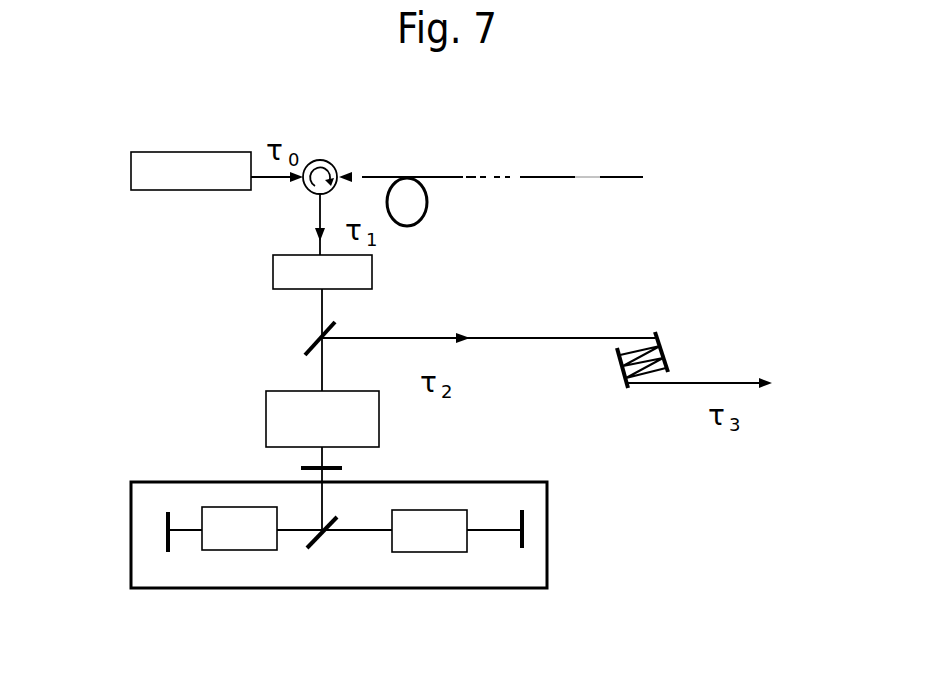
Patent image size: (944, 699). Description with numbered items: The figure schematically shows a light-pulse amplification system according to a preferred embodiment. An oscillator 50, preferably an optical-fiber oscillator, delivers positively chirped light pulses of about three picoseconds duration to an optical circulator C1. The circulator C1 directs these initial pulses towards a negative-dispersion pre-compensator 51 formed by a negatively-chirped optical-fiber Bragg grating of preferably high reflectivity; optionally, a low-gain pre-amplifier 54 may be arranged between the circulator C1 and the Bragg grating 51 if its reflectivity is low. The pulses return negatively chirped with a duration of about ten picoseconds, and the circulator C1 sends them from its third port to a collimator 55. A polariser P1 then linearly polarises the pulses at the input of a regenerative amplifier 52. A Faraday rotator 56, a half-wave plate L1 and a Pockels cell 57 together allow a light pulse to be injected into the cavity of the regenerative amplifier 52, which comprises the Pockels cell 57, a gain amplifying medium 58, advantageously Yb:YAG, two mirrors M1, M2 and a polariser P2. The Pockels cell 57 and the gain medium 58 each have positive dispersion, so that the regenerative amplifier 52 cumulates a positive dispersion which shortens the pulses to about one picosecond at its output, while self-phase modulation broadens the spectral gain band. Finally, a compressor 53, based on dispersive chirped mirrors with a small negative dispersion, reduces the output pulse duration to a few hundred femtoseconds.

The oscillator 50 is at (230, 190).
The negative-dispersion pre-compensator 51 is at (572, 177).
The regenerative amplifier 52 is at (550, 510).
The compressor 53 is at (658, 332).
The pre-amplifier 54 is at (428, 212).
The collimator 55 is at (372, 275).
The Faraday rotator 56 is at (265, 400).
The Pockels cell 57 is at (245, 550).
The gain amplifying medium 58 is at (430, 552).
The optical circulator C1 is at (330, 155).
The polariser P1 is at (300, 352).
The polariser P2 is at (307, 548).
The half-wave plate L1 is at (342, 468).
The mirror M1 is at (165, 512).
The mirror M2 is at (523, 535).